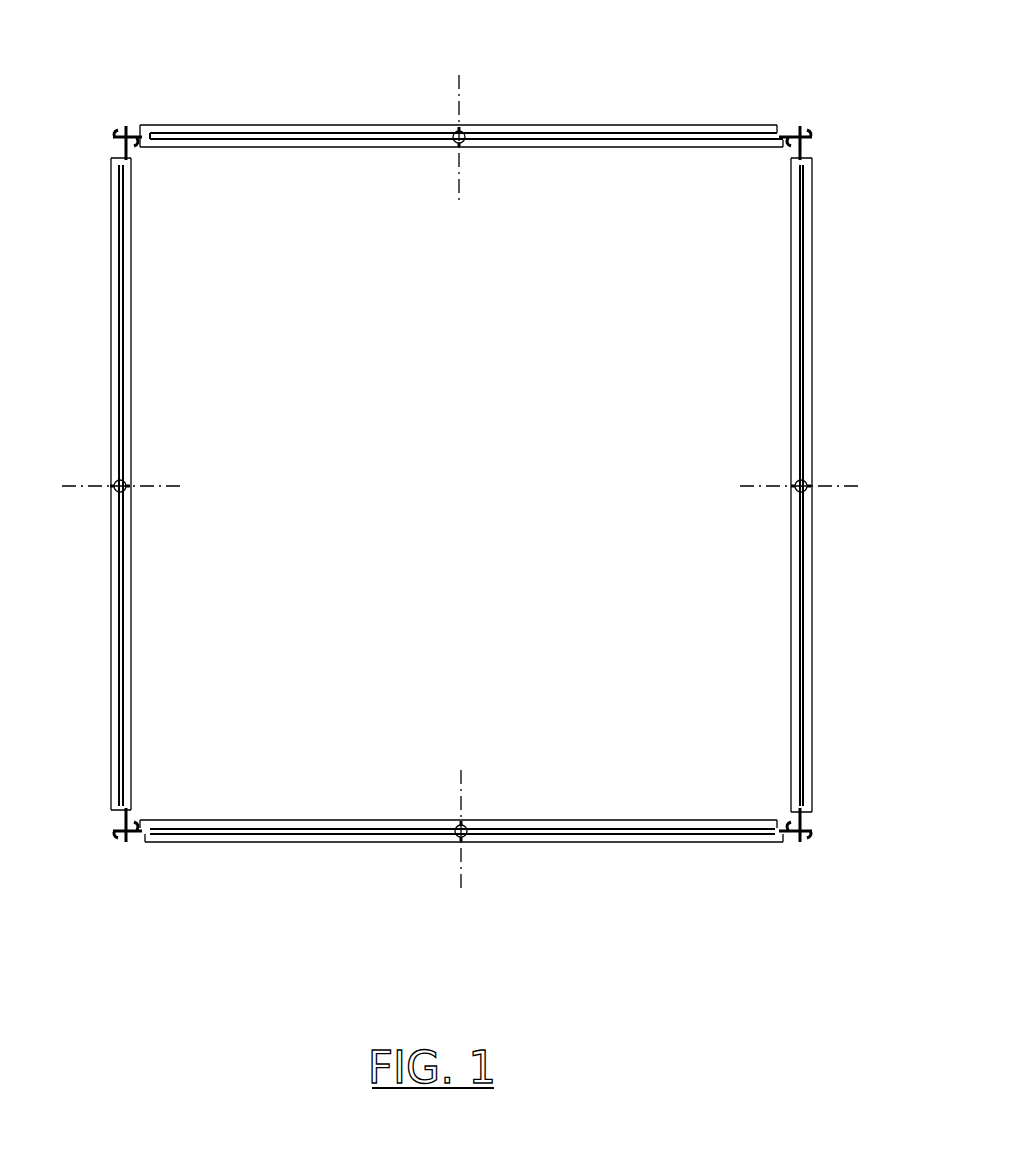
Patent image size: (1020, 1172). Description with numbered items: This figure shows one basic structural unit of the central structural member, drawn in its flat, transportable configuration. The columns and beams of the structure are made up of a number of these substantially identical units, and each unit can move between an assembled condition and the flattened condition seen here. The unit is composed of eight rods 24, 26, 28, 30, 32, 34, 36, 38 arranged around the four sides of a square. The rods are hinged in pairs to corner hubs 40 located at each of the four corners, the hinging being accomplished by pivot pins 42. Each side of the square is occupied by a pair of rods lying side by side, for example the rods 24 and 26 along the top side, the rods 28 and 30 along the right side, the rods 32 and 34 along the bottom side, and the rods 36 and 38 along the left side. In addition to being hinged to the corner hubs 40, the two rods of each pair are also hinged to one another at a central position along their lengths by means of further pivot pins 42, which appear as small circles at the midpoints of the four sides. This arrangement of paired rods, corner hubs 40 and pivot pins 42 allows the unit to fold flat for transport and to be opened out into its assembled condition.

The rod 24 is at (243, 146).
The rod 26 is at (370, 128).
The rod 28 is at (797, 276).
The rod 30 is at (808, 355).
The rod 32 is at (656, 822).
The rod 34 is at (625, 843).
The rod 36 is at (132, 346).
The rod 38 is at (117, 406).
The corner hub 40 is at (124, 128).
The pivot pin 42 is at (461, 146).